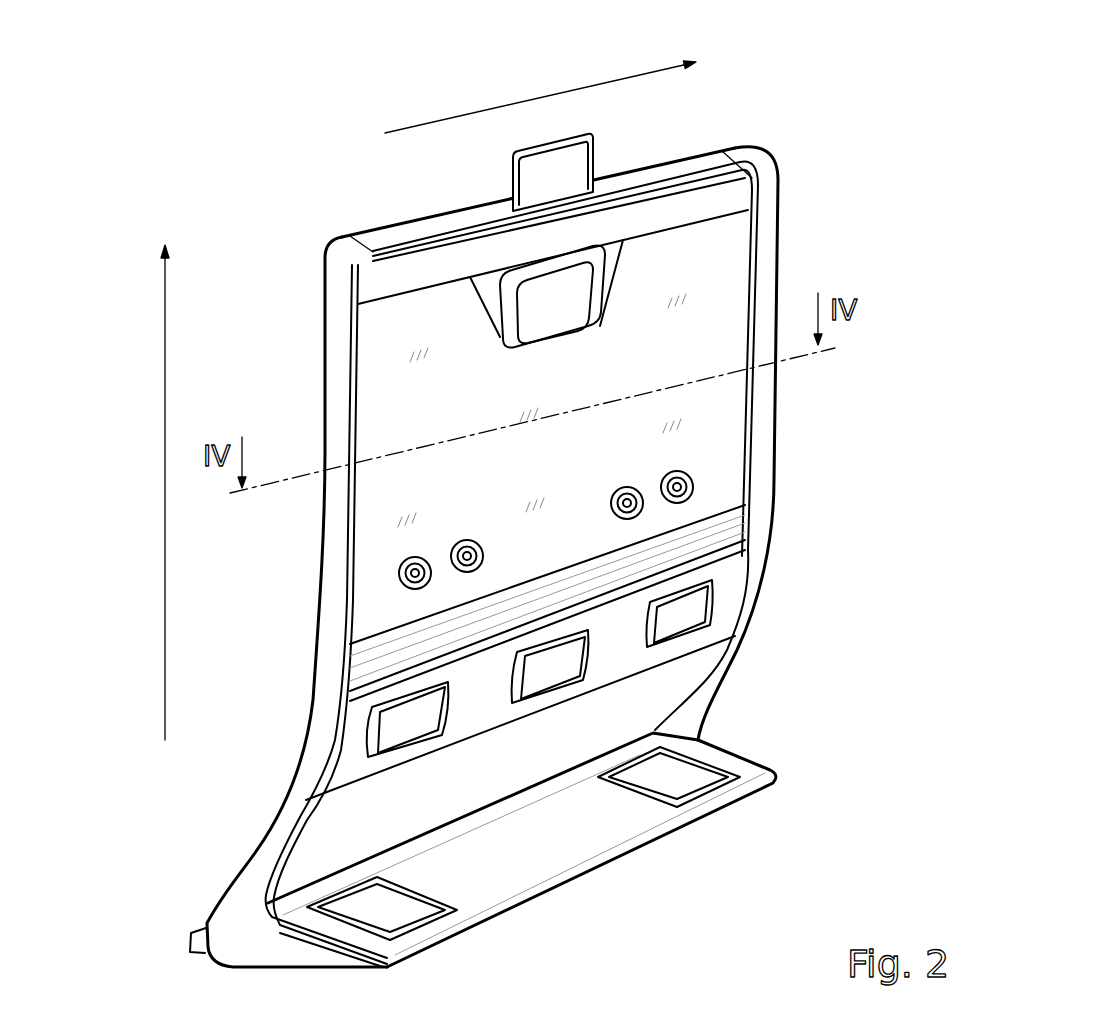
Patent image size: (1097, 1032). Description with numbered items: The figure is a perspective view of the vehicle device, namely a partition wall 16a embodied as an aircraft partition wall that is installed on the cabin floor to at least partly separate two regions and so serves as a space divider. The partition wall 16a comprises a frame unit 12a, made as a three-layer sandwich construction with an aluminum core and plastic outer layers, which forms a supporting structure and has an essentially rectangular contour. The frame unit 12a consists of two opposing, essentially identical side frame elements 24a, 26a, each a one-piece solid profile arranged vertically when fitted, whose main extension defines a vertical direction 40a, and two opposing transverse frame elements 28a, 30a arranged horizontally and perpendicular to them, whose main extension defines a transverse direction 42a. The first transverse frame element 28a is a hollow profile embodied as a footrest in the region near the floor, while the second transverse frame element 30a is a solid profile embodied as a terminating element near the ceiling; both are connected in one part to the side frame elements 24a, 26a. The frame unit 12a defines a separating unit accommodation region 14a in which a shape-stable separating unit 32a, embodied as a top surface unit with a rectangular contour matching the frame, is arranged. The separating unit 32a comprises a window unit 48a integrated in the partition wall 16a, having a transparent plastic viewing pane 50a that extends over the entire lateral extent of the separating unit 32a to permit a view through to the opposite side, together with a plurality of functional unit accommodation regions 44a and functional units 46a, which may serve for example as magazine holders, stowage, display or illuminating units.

The frame unit 12a is at (550, 536).
The separating unit accommodation region 14a is at (522, 850).
The partition wall 16a is at (550, 485).
The side frame element 24a is at (346, 332).
The side frame element 26a is at (764, 270).
The first transverse frame element 28a is at (632, 813).
The second transverse frame element 30a is at (433, 215).
The separating unit 32a is at (710, 442).
The vertical direction 40a is at (164, 502).
The transverse direction 42a is at (532, 97).
The functional unit accommodation region 44a is at (602, 170).
The functional unit 46a is at (728, 600).
The window unit 48a is at (420, 403).
The viewing pane 50a is at (372, 612).